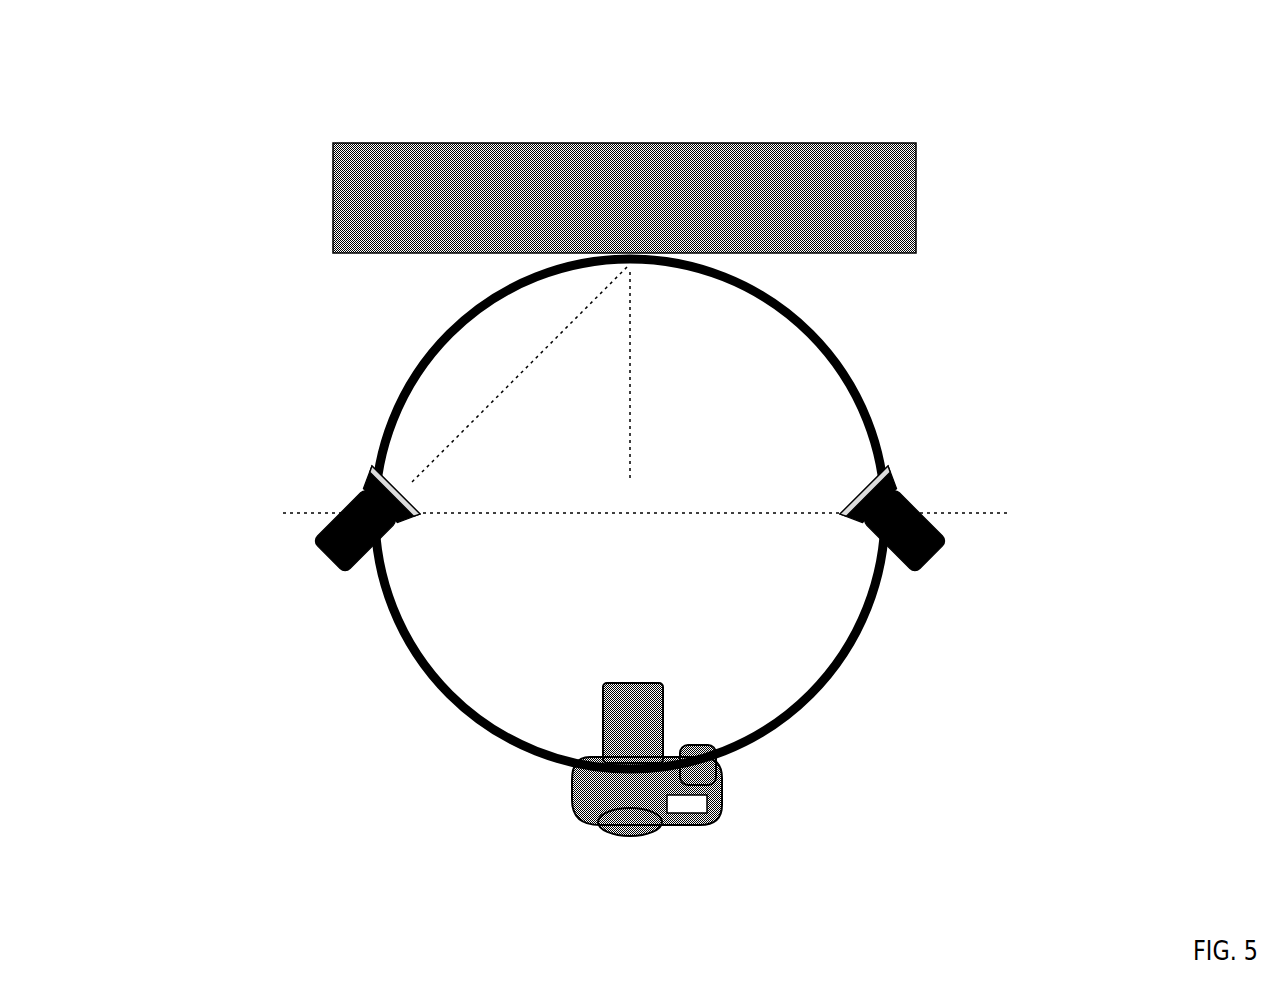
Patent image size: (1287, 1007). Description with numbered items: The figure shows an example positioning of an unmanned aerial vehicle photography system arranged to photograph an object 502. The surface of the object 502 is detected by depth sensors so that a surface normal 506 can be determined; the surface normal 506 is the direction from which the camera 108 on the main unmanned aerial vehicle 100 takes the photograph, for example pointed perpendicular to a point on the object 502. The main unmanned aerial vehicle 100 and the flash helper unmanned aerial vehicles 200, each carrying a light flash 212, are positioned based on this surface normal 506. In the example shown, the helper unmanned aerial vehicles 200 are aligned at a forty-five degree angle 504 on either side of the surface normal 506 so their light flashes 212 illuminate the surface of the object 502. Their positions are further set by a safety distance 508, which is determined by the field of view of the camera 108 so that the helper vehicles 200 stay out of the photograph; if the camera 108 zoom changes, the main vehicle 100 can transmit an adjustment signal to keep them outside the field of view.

The unmanned aerial vehicle 100 is at (852, 835).
The camera 108 is at (641, 842).
The unmanned aerial vehicle 200 is at (636, 662).
The light flash 212 is at (320, 526).
The object 502 is at (637, 142).
The 45 degree angle 504 is at (447, 461).
The surface normal 506 is at (807, 356).
The safety distance 508 is at (640, 549).